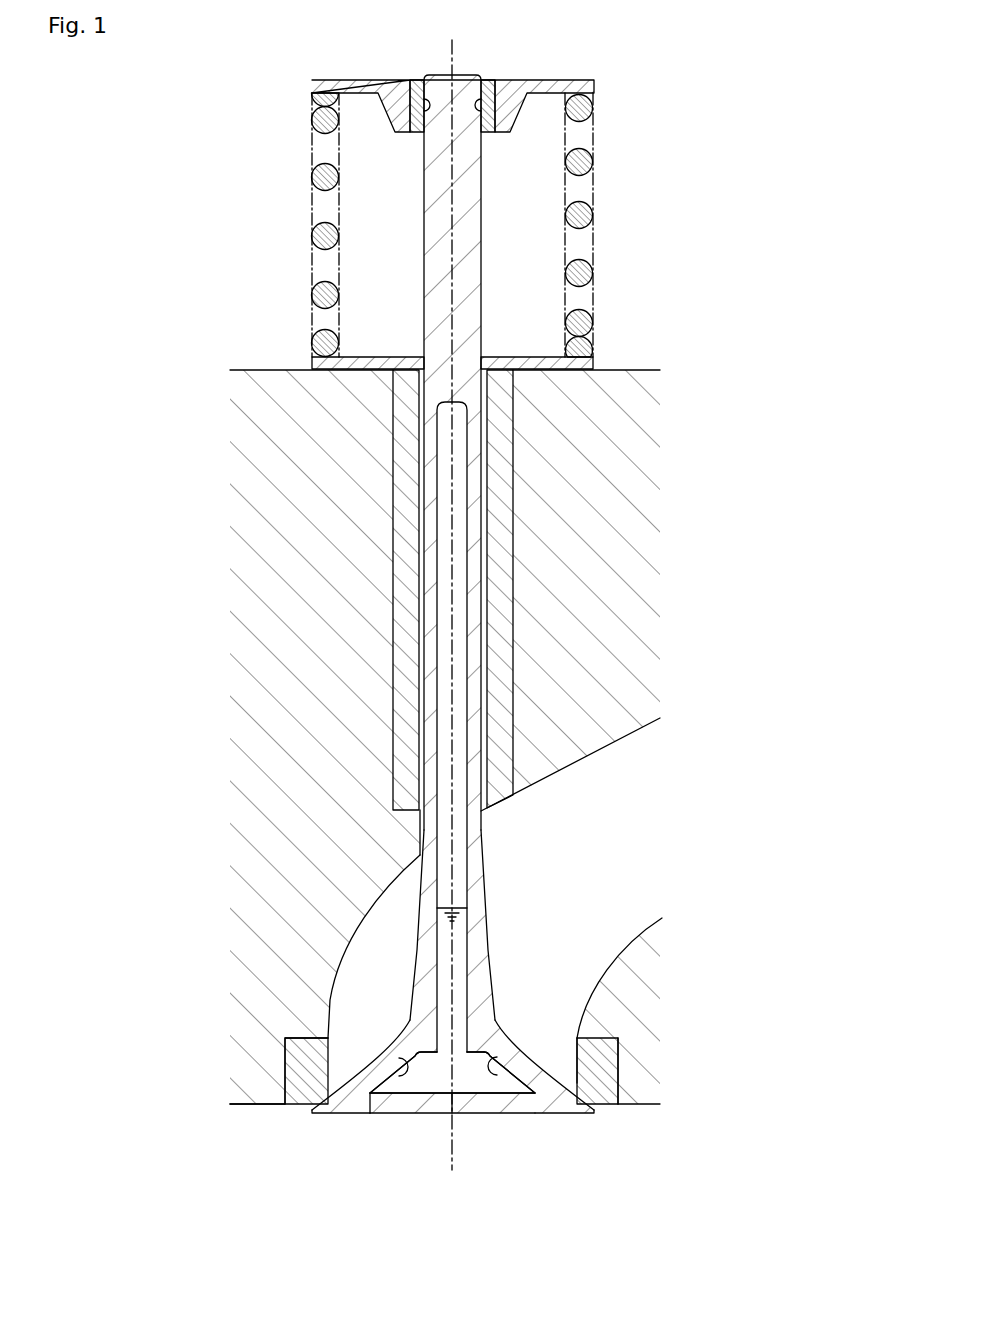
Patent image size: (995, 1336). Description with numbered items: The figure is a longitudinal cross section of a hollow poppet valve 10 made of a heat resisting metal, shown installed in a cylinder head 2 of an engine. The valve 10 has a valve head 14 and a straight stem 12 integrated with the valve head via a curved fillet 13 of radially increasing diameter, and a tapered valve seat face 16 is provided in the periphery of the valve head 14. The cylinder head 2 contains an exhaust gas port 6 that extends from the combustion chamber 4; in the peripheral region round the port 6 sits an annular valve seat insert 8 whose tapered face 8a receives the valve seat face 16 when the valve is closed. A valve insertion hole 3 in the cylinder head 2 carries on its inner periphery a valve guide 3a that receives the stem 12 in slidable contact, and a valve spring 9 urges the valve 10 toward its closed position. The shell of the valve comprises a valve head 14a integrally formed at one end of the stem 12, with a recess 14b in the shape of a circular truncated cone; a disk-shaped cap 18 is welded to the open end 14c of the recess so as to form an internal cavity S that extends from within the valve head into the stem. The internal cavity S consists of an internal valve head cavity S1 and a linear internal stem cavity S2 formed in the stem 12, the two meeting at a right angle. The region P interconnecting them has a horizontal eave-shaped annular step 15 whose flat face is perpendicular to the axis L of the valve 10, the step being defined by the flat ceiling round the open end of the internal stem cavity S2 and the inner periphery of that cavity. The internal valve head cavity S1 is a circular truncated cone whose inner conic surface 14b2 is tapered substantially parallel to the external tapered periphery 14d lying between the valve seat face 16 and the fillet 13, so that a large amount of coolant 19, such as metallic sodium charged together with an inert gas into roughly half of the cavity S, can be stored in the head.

The cylinder head 2 is at (595, 457).
The valve insertion hole 3 is at (453, 600).
The valve guide 3a is at (512, 565).
The combustion chamber 4 is at (574, 1219).
The exhaust gas port 6 is at (561, 897).
The annular valve seat insert 8 is at (451, 1103).
The tapered face 8a is at (580, 1106).
The valve spring 9 is at (311, 200).
The hollow poppet valve 10 is at (426, 648).
The stem 12 is at (424, 313).
The curved fillet 13 is at (405, 1033).
The valve head 14 is at (434, 1108).
The valve head 14a is at (372, 1096).
The recess 14b is at (445, 1157).
The inner conic surface 14b2 is at (400, 1068).
The open end 14c is at (392, 1100).
The external tapered periphery 14d is at (372, 1089).
The eave-shape annular step 15 is at (472, 1068).
The valve seat face 16 is at (598, 1092).
The cap 18 is at (527, 1097).
The coolant 19 is at (460, 977).
The axis L is at (452, 62).
The interconnecting region P is at (463, 1134).
The internal cavity S is at (568, 747).
The internal valve head cavity S1 is at (555, 1030).
The internal stem cavity S2 is at (455, 852).